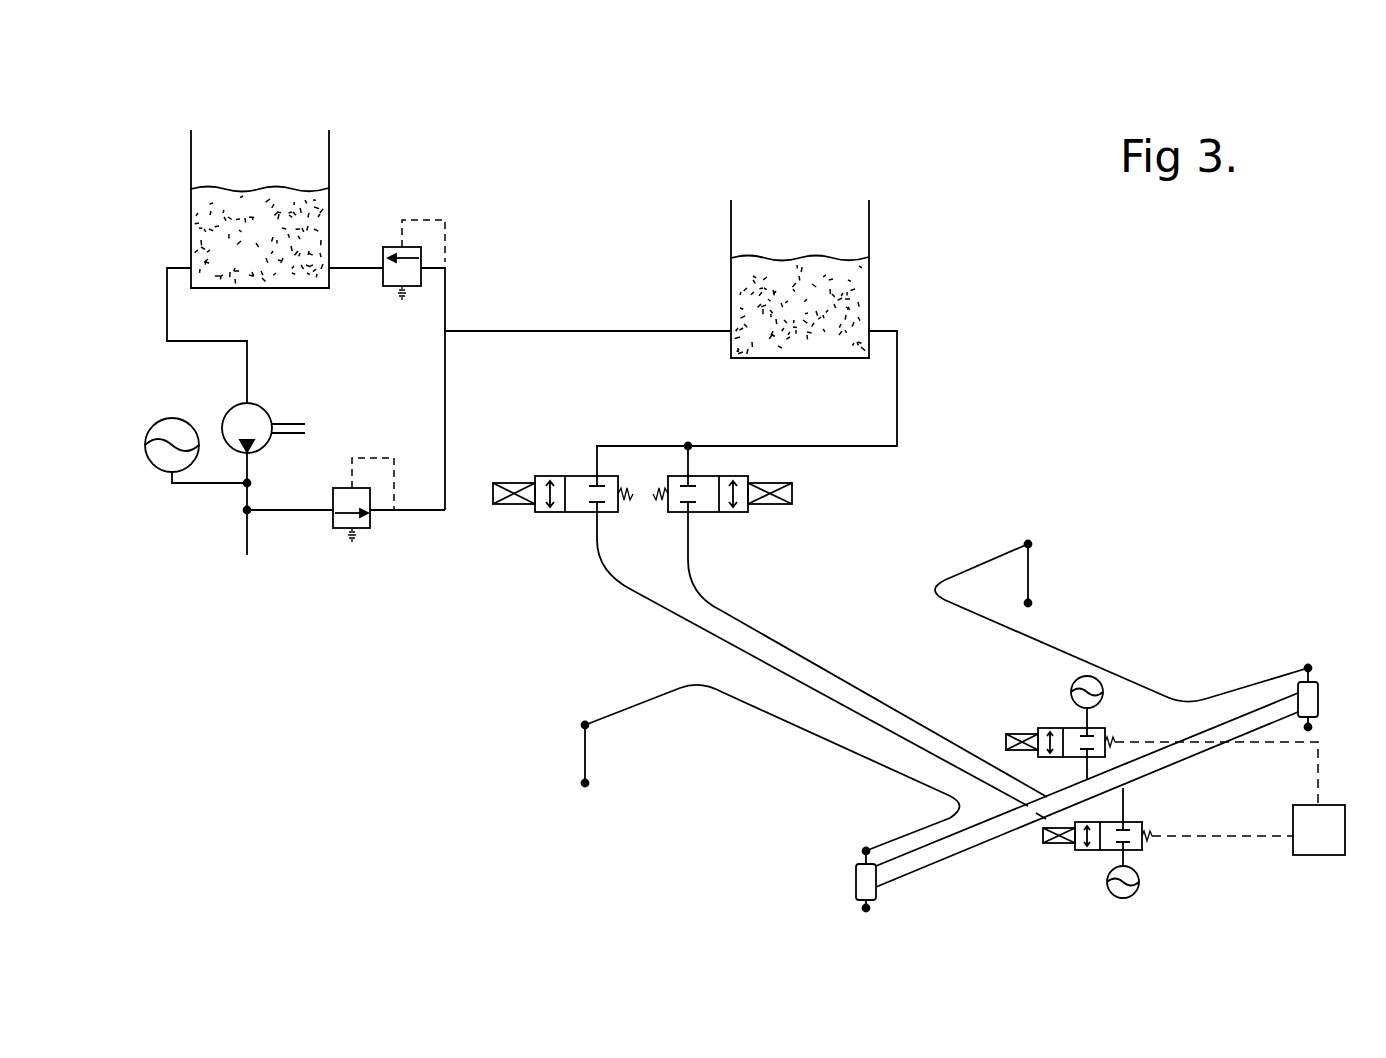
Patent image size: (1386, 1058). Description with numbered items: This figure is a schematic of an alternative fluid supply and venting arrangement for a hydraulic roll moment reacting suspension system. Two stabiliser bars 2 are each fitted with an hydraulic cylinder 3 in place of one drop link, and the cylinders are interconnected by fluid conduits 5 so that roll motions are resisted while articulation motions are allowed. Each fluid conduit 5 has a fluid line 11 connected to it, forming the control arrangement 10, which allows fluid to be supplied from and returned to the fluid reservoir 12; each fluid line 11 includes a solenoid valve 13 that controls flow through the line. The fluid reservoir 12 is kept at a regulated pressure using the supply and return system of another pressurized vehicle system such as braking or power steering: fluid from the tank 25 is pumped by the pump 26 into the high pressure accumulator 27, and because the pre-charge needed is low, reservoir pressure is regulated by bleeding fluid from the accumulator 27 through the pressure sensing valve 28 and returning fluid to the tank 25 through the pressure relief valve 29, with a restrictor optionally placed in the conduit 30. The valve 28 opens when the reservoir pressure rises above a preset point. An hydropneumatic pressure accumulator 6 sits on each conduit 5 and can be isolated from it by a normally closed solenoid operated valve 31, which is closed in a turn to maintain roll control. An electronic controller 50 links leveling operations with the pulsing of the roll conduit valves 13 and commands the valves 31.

The stabiliser bar 2 is at (808, 730).
The hydraulic cylinder 3 is at (856, 878).
The fluid conduit 5 is at (982, 827).
The hydropneumatic pressure accumulator 6 is at (1071, 690).
The control arrangement 10 is at (933, 381).
The fluid line 11 is at (698, 624).
The fluid reservoir 12 is at (873, 305).
The solenoid valve 13 is at (580, 513).
The tank 25 is at (330, 198).
The pump 26 is at (268, 408).
The high pressure accumulator 27 is at (160, 473).
The pressure sensing valve 28 is at (370, 528).
The pressure relief valve 29 is at (443, 248).
The conduit 30 is at (599, 328).
The solenoid operated valve 31 is at (1022, 732).
The electronic controller 50 is at (1340, 855).